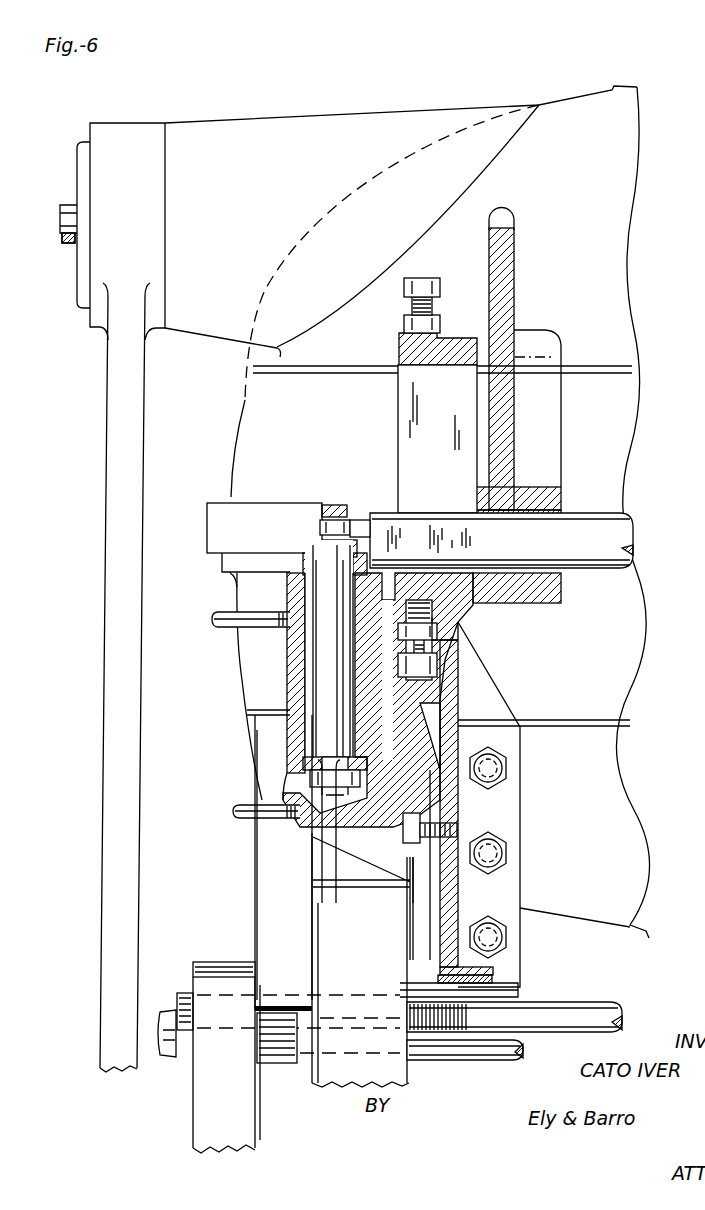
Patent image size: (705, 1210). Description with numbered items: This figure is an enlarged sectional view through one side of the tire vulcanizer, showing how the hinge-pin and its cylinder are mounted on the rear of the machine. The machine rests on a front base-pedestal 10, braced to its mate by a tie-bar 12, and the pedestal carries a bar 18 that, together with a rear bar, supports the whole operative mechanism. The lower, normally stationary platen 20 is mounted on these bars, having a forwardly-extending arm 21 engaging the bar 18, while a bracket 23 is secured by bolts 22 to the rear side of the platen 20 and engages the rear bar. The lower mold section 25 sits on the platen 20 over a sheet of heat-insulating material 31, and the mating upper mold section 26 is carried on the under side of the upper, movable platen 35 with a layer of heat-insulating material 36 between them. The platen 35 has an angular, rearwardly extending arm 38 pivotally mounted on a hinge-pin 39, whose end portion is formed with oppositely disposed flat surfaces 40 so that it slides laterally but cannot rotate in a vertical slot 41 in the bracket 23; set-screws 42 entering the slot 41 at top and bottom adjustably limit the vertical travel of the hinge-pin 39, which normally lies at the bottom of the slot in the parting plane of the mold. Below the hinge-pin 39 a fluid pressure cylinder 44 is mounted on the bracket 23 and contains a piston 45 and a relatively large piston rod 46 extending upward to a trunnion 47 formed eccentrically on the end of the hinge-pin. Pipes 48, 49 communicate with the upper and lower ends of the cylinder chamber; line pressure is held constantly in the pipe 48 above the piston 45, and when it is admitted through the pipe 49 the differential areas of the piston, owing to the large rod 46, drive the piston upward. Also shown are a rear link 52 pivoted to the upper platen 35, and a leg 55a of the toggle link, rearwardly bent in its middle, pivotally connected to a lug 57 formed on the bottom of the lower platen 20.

The base-pedestal 10 is at (203, 1100).
The tie-bar 12 is at (482, 1046).
The bar 18 is at (600, 1012).
The lower platen 20 is at (605, 813).
The arm 21 is at (287, 1053).
The bolt 22 is at (503, 833).
The bracket 23 is at (447, 900).
The lower mold section 25 is at (248, 670).
The upper mold section 26 is at (257, 413).
The heat-insulating material 31 is at (247, 717).
The upper platen 35 is at (615, 196).
The heat-insulating material 36 is at (253, 367).
The arm 38 is at (508, 455).
The hinge-pin 39 is at (615, 538).
The flat surface 40 is at (425, 530).
The vertical slot 41 is at (413, 421).
The set-screw 42 is at (413, 385).
The fluid pressure cylinder 44 is at (290, 683).
The piston 45 is at (300, 778).
The piston rod 46 is at (325, 640).
The trunnion 47 is at (320, 523).
The fluid inlet and outlet pipe 48 is at (220, 611).
The fluid inlet and outlet pipe 49 is at (243, 818).
The link 52 is at (107, 580).
The leg 55a is at (362, 939).
The lug 57 is at (267, 887).